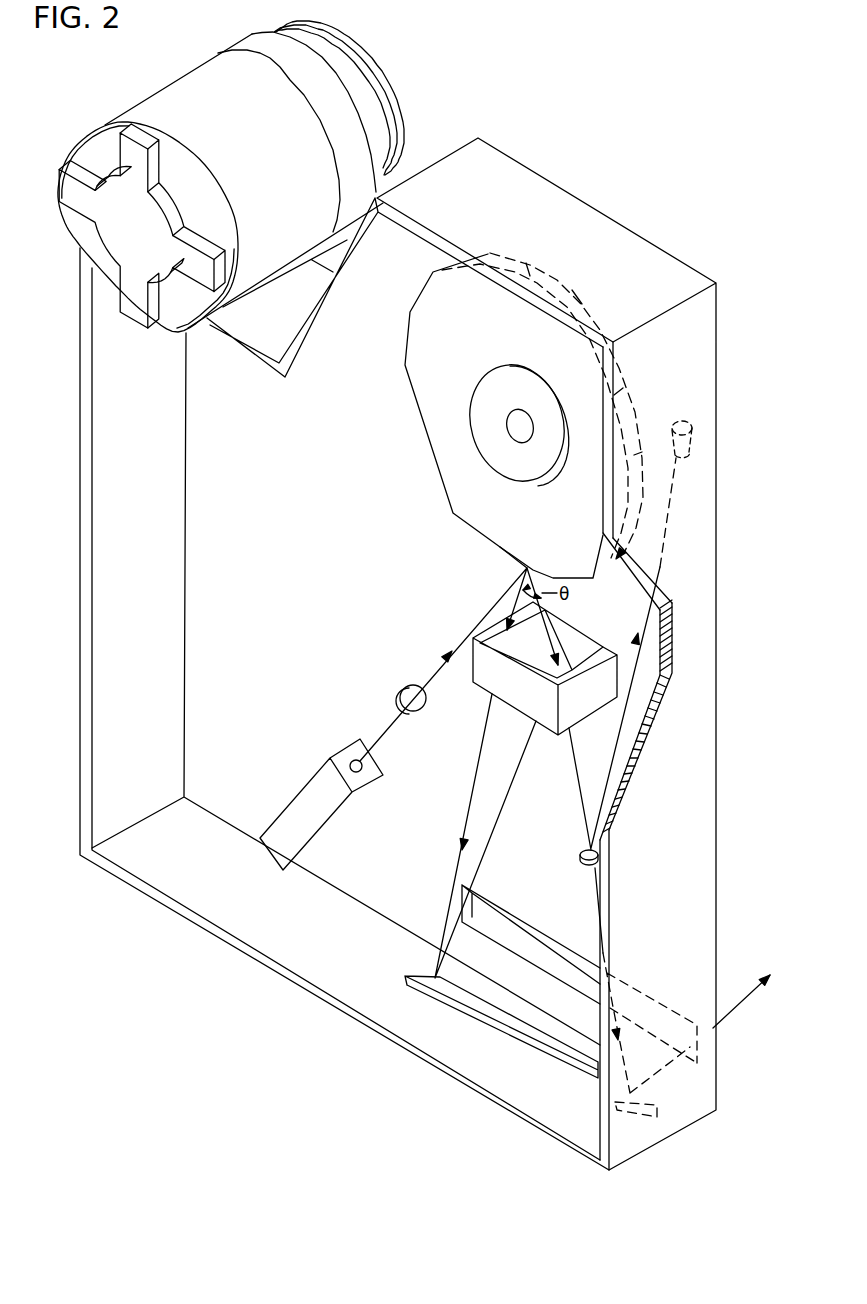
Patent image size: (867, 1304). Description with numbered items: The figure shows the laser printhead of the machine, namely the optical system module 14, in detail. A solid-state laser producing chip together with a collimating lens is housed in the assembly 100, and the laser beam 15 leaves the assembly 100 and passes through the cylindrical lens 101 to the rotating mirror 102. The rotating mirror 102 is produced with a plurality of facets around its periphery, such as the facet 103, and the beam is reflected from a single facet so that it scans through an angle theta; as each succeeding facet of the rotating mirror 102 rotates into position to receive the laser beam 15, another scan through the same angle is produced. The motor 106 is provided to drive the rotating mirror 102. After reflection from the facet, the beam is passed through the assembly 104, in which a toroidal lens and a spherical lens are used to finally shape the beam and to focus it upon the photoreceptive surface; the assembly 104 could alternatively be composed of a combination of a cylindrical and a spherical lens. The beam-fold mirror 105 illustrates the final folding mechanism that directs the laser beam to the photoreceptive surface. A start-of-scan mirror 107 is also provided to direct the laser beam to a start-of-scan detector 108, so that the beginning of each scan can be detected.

The optical system module 14 is at (583, 223).
The laser beam 15 is at (387, 731).
The assembly 100 is at (314, 785).
The cylindrical lens 101 is at (409, 690).
The rotating mirror 102 is at (437, 406).
The facet 103 is at (511, 557).
The assembly 104 is at (493, 697).
The beam-fold mirror 105 is at (404, 977).
The motor 106 is at (173, 97).
The start-of-scan mirror 107 is at (598, 858).
The start-of-scan detector 108 is at (696, 442).